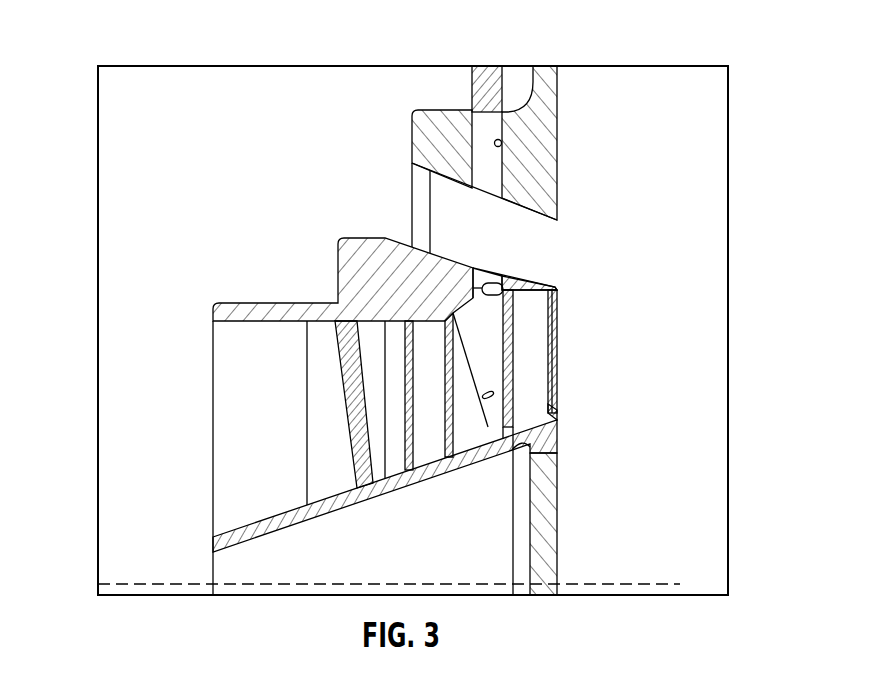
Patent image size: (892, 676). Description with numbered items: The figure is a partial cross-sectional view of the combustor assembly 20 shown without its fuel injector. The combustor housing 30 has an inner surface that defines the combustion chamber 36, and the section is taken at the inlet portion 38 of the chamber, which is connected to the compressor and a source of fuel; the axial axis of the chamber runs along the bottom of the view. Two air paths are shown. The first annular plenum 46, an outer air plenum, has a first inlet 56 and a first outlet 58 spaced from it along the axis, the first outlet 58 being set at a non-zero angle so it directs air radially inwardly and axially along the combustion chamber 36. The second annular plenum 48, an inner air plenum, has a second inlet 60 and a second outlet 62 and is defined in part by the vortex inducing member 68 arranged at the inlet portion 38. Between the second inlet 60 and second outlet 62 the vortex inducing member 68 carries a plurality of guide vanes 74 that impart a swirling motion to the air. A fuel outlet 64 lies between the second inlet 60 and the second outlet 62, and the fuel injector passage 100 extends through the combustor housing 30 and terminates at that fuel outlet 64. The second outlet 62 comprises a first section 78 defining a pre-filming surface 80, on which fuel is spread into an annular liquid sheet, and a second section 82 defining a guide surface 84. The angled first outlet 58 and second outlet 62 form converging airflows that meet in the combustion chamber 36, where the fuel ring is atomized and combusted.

The combustor assembly 20 is at (413, 108).
The combustor housing 30 is at (406, 133).
The combustion chamber 36 is at (708, 503).
The inlet portion 38 is at (437, 133).
The first annular plenum 46 is at (482, 240).
The second annular plenum 48 is at (322, 392).
The first inlet 56 is at (412, 185).
The first outlet 58 is at (556, 222).
The second inlet 60 is at (213, 470).
The second outlet 62 is at (557, 398).
The fuel outlet 64 is at (500, 305).
The vortex inducing member 68 is at (466, 474).
The guide vanes 74 is at (447, 400).
The first section 78 is at (532, 302).
The pre-filming surface 80 is at (552, 288).
The second section 82 is at (549, 409).
The guide surface 84 is at (557, 437).
The fuel injector passage 100 is at (504, 146).